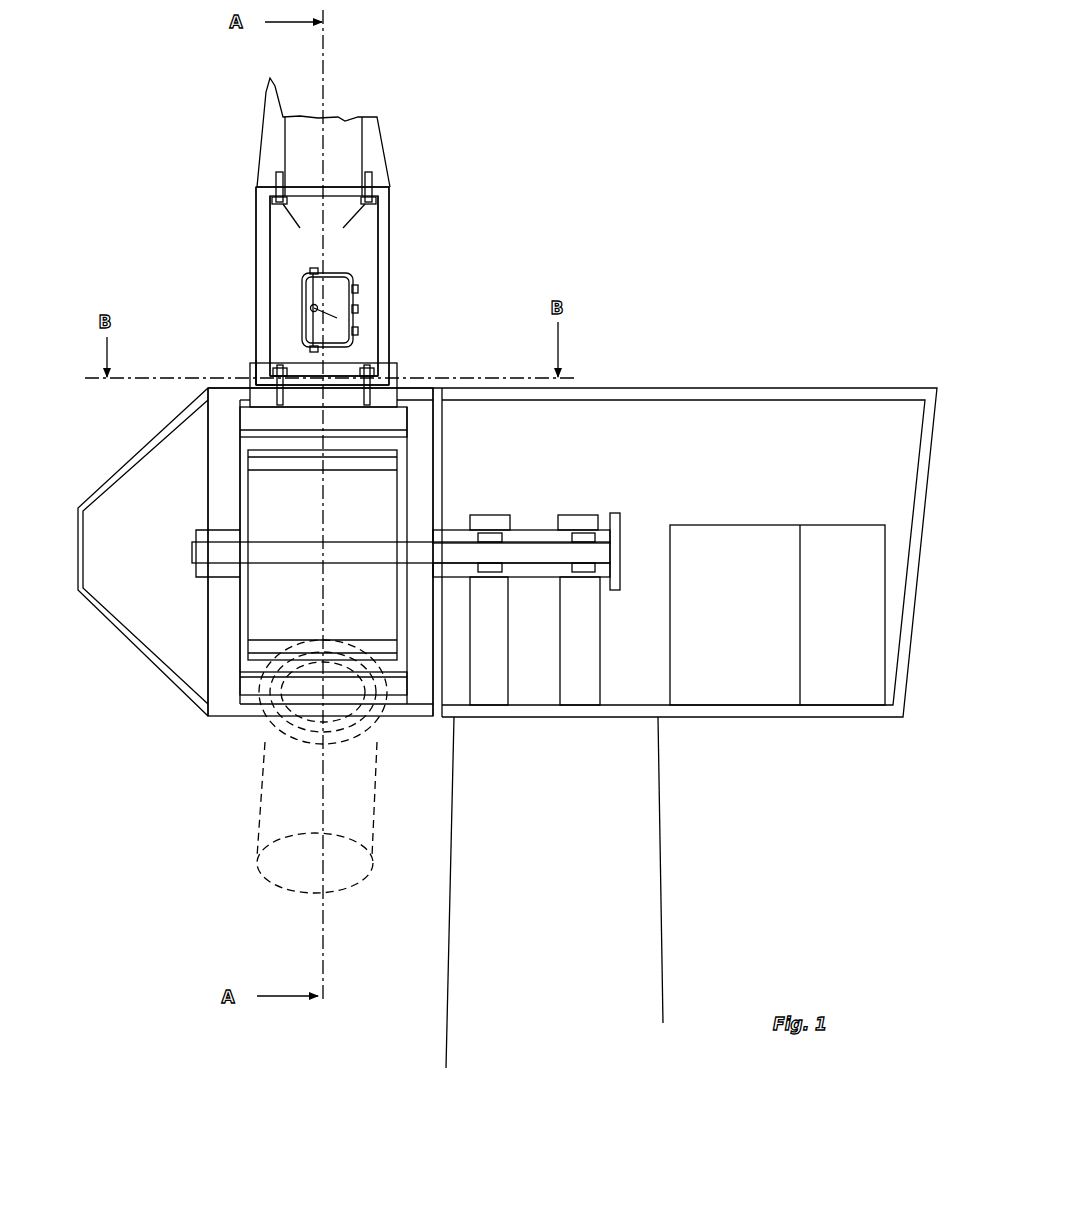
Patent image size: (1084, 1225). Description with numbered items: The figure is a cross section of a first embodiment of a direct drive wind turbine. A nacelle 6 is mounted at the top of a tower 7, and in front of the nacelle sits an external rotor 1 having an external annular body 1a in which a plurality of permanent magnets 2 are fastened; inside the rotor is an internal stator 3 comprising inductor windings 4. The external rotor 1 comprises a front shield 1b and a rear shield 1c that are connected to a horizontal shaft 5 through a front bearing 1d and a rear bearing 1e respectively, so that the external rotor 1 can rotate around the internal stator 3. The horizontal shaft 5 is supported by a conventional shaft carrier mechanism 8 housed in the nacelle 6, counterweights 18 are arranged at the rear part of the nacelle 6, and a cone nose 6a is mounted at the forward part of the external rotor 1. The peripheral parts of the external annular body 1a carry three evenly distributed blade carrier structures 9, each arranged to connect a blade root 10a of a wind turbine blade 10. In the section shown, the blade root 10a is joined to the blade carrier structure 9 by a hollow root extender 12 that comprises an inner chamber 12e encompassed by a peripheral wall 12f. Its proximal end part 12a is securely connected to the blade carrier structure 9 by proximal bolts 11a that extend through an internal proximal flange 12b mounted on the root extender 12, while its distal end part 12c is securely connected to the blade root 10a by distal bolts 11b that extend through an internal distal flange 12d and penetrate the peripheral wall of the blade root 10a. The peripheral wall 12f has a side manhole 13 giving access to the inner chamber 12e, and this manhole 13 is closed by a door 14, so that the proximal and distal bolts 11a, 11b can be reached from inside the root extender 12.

The external rotor 1 is at (369, 527).
The external annular body 1a is at (398, 420).
The front shield 1b is at (220, 640).
The rear shield 1c is at (442, 483).
The front bearing 1d is at (222, 535).
The rear bearing 1e is at (436, 531).
The permanent magnets 2 is at (267, 432).
The internal stator 3 is at (243, 664).
The inductor windings 4 is at (267, 463).
The horizontal shaft 5 is at (360, 552).
The nacelle 6 is at (580, 388).
The cone nose 6a is at (146, 453).
The tower 7 is at (662, 913).
The shaft carrier mechanism 8 is at (500, 617).
The blade carrier structure 9 is at (250, 382).
The wind turbine blade 10 is at (247, 104).
The blade root 10a is at (378, 156).
The proximal bolts 11a is at (370, 378).
The distal bolts 11b is at (275, 190).
The root extender 12 is at (311, 278).
The proximal end part 12a is at (265, 380).
The internal proximal flange 12b is at (322, 371).
The distal end part 12c is at (390, 208).
The internal distal flange 12d is at (322, 219).
The inner chamber 12e is at (285, 248).
The peripheral wall 12f is at (265, 226).
The side manhole 13 is at (302, 295).
The door 14 is at (338, 296).
The counterweights 18 is at (830, 550).